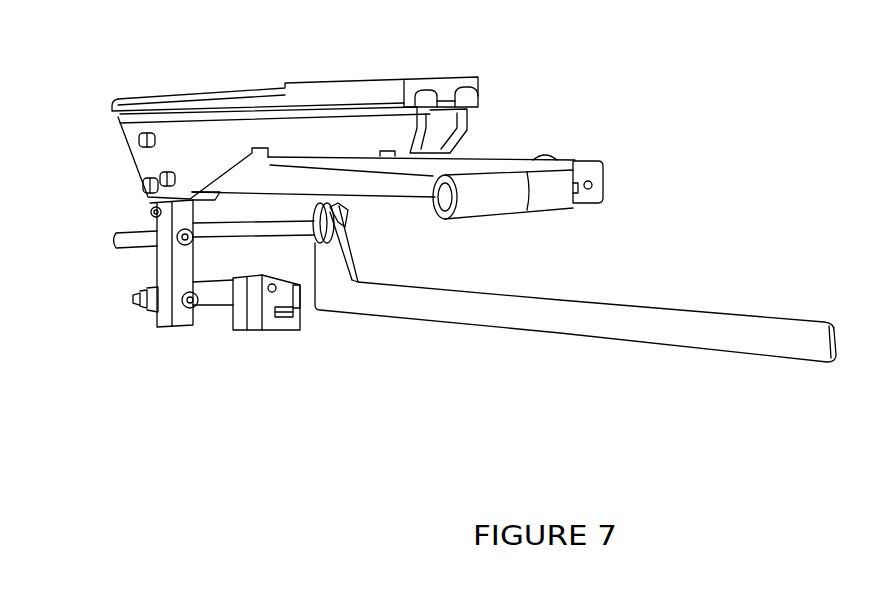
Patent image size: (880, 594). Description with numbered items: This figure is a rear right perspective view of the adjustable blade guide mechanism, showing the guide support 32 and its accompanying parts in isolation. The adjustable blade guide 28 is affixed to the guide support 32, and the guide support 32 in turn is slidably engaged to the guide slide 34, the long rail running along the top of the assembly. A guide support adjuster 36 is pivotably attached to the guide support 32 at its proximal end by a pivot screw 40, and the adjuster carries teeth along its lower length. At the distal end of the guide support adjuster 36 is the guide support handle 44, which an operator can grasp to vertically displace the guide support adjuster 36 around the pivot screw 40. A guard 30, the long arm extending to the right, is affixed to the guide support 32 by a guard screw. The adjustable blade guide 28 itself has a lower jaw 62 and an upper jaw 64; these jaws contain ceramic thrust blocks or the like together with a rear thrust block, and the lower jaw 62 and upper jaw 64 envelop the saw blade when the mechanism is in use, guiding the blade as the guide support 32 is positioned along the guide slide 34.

The adjustable blade guide 28 is at (280, 333).
The guard 30 is at (492, 317).
The guide support 32 is at (147, 158).
The guide slide 34 is at (346, 88).
The guide support adjuster 36 is at (397, 187).
The pivot screw 40 is at (174, 173).
The guide support handle 44 is at (503, 187).
The lower jaw 62 is at (298, 327).
The upper jaw 64 is at (274, 284).